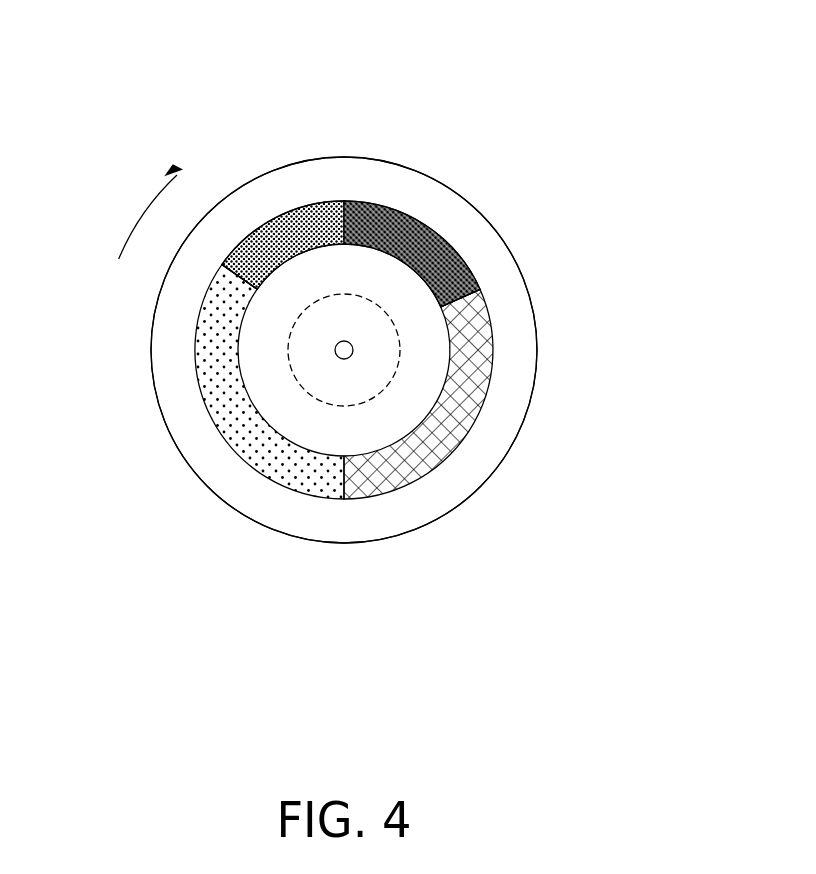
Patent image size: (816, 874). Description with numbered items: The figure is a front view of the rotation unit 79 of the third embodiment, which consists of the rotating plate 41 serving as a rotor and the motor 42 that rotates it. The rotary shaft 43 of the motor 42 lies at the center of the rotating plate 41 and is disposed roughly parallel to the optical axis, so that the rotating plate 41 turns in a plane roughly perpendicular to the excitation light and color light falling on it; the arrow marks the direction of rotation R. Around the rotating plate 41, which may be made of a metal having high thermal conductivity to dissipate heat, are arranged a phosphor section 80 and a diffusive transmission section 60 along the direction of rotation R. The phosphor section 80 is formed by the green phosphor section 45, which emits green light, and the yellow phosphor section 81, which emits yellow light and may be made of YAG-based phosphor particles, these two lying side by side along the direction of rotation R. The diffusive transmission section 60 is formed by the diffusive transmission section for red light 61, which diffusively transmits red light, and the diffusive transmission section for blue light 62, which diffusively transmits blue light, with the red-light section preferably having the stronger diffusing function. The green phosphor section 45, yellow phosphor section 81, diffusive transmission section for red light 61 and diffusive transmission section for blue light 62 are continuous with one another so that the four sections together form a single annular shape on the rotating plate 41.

The rotation unit 79 is at (223, 140).
The rotating plate 41 is at (512, 310).
The direction of rotation R is at (148, 210).
The diffusive transmission section 60 is at (268, 88).
The diffusive transmission section for blue light 62 is at (285, 230).
The diffusive transmission section for red light 61 is at (410, 216).
The phosphor section 80 is at (268, 620).
The yellow phosphor section 81 is at (422, 478).
The green phosphor section 45 is at (270, 458).
The motor 42 is at (380, 352).
The rotary shaft 43 is at (344, 350).